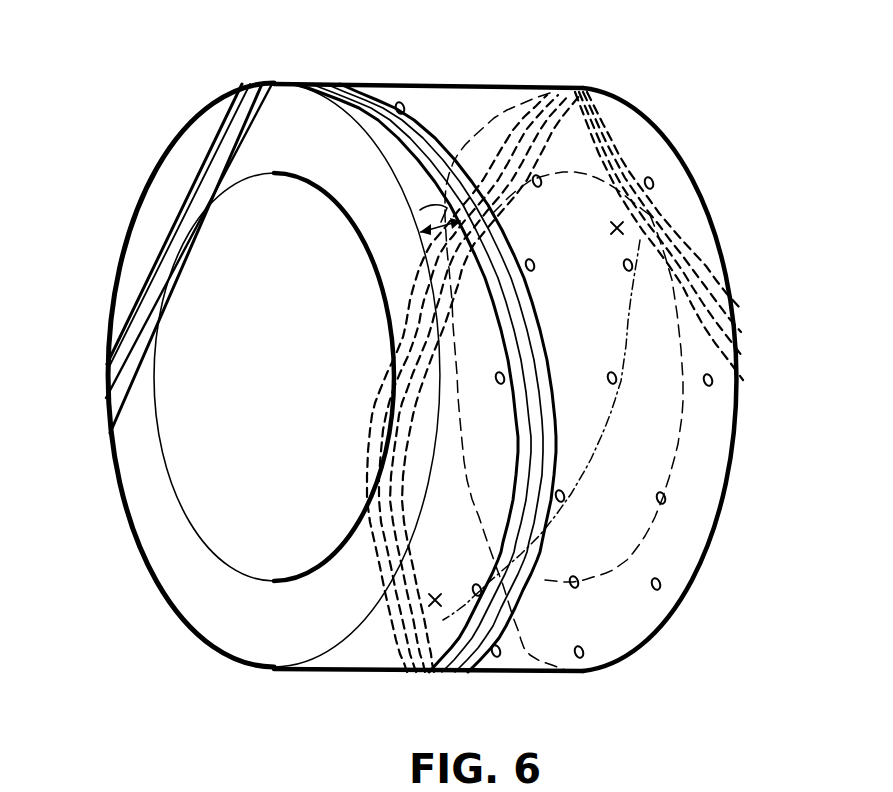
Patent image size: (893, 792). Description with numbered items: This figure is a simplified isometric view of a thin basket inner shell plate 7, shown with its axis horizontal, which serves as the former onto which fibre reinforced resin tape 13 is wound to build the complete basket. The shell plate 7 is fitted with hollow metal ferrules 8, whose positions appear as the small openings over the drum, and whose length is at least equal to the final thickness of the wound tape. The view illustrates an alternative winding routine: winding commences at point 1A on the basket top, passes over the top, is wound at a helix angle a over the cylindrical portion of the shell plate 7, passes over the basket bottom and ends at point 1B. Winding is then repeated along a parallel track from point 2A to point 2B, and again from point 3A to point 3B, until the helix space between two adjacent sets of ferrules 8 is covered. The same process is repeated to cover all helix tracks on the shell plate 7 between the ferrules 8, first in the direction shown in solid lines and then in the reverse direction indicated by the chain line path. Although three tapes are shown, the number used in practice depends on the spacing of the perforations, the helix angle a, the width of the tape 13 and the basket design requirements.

The shell plate 7 is at (482, 86).
The fibre reinforced resin tape 13 is at (318, 85).
The hollow metal ferrules 8 is at (584, 648).
The winding start point 1A is at (105, 366).
The winding start point of second tape 2A is at (105, 398).
The winding start point of third tape 3A is at (108, 433).
The winding end point 1B is at (745, 320).
The winding end point of second tape 2B is at (746, 346).
The winding end point of third tape 3B is at (746, 366).
The helix angle a is at (420, 210).